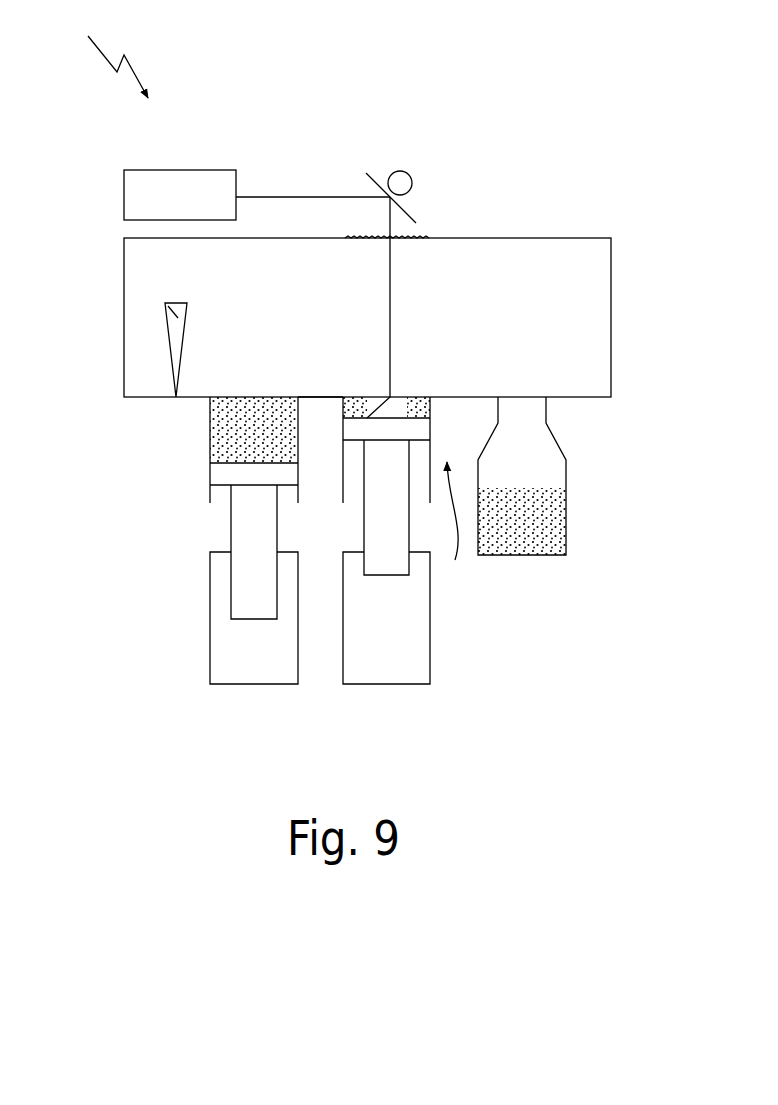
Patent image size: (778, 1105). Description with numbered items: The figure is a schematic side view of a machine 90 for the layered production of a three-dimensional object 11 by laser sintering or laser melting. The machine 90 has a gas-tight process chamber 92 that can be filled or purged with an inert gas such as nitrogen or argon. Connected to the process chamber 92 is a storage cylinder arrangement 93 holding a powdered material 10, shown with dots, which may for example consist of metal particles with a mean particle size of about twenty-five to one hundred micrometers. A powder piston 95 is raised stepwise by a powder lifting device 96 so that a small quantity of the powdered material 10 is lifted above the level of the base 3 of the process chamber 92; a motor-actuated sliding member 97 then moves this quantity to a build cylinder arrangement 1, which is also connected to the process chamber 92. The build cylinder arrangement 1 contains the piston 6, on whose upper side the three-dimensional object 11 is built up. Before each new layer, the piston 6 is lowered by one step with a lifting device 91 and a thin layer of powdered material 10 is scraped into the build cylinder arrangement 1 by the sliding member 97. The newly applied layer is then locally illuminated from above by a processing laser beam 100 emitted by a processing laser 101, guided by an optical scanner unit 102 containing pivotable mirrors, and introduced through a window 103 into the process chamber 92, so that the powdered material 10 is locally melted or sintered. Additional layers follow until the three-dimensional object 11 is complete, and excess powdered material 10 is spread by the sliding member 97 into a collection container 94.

The machine 90 is at (109, 52).
The processing laser beam 100 is at (270, 197).
The processing laser 101 is at (150, 195).
The optical scanner unit 102 is at (386, 180).
The window 103 is at (422, 238).
The process chamber 92 is at (552, 238).
The sliding member 97 is at (165, 305).
The base 3 is at (327, 380).
The powdered material 10 is at (225, 423).
The three-dimensional object 11 is at (395, 407).
The piston 6 is at (358, 425).
The storage cylinder arrangement 93 is at (193, 484).
The powder piston 95 is at (232, 480).
The powder lifting device 96 is at (218, 607).
The lifting device 91 is at (415, 622).
The collection container 94 is at (552, 477).
The build cylinder arrangement 1 is at (456, 525).